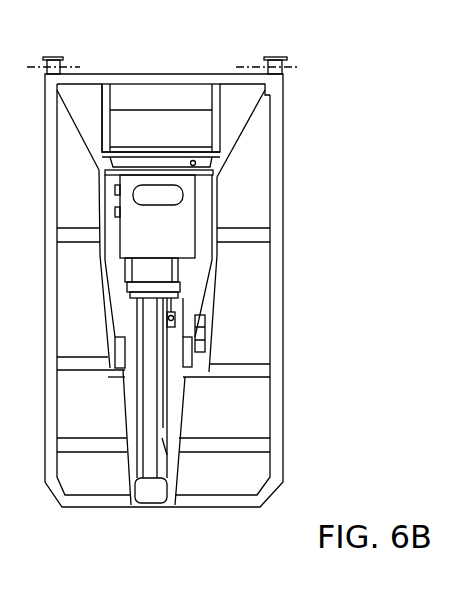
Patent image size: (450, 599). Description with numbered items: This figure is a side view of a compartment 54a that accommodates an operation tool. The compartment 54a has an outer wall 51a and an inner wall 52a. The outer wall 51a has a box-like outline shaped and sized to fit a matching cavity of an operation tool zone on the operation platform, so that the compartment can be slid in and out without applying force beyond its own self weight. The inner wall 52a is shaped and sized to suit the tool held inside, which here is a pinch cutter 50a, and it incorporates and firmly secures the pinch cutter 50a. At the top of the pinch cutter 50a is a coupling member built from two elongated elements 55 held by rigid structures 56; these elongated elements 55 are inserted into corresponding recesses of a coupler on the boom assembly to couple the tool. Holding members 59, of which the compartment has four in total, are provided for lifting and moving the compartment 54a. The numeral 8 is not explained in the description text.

The tank 8 is at (105, 113).
The pinch cutter 50a is at (167, 240).
The outer wall 51a is at (283, 193).
The inner wall 52a is at (235, 137).
The compartment 54a is at (252, 320).
The elongated elements 55 is at (160, 110).
The rigid structures 56 is at (106, 95).
The holding members 59 is at (48, 57).